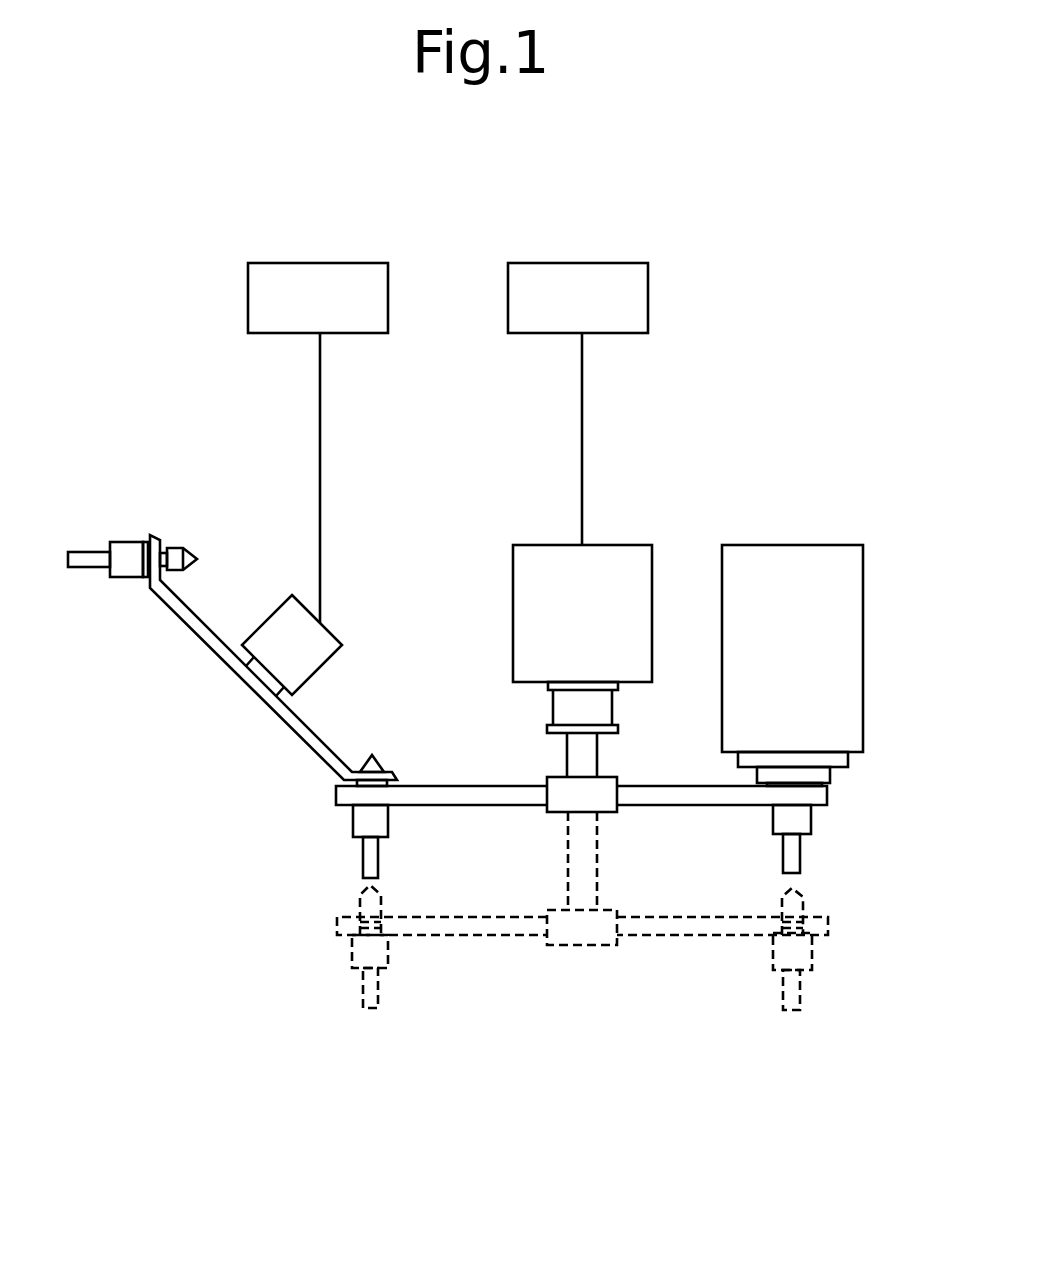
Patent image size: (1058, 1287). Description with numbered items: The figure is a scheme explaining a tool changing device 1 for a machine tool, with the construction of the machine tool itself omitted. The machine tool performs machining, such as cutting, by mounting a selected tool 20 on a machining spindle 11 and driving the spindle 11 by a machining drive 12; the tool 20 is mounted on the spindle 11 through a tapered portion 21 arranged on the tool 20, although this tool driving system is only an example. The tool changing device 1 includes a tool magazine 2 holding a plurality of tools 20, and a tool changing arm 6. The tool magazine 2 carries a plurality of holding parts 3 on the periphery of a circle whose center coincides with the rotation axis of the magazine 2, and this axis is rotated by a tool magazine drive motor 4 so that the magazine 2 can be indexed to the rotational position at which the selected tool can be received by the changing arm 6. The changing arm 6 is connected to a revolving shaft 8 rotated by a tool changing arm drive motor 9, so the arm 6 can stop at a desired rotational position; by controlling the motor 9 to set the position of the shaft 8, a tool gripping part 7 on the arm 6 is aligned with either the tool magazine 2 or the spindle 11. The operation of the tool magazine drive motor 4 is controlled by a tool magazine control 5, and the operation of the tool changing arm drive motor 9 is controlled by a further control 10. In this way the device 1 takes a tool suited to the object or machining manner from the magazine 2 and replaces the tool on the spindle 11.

The tool changing device 1 is at (595, 1019).
The tool magazine 2 is at (201, 648).
The holding part 3 is at (141, 581).
The tool magazine drive motor 4 is at (321, 643).
The tool magazine control 5 is at (320, 263).
The tool changing arm 6 is at (533, 954).
The tool gripping part 7 is at (389, 926).
The revolving shaft 8 is at (590, 757).
The tool changing arm drive motor 9 is at (623, 563).
The tool magazine control 10 is at (580, 263).
The machining spindle 11 is at (822, 795).
The machining drive 12 is at (789, 562).
The tool 20 is at (133, 526).
The tapered portion 21 is at (183, 550).